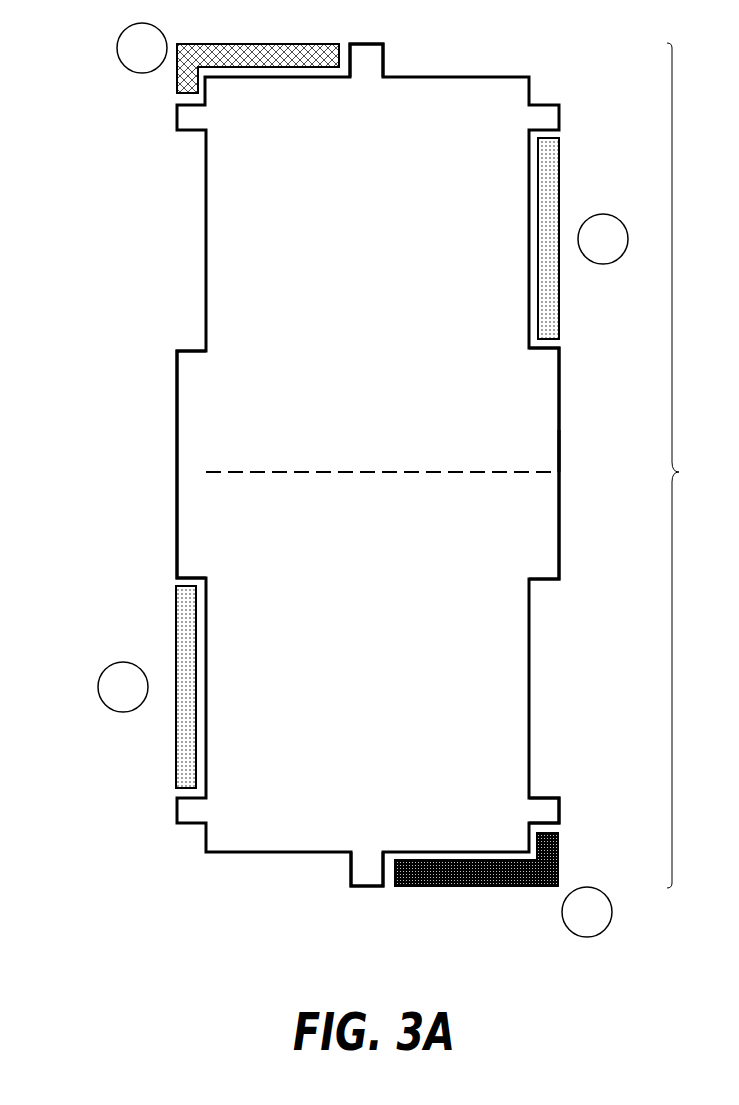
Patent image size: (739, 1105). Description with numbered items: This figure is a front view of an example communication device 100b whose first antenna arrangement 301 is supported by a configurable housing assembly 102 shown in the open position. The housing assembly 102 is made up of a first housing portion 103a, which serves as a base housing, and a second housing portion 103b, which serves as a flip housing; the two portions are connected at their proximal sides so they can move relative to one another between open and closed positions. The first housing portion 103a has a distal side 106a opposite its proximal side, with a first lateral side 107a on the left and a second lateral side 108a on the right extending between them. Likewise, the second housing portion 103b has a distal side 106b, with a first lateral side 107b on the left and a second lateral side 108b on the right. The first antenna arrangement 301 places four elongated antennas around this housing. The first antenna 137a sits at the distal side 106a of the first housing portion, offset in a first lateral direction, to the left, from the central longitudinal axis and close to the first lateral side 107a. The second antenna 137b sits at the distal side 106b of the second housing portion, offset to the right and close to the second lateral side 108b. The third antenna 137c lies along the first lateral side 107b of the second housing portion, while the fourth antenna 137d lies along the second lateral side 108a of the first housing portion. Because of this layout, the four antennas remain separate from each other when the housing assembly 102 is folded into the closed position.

The communication device 100b is at (99, 139).
The housing assembly 102 is at (515, 75).
The first housing portion 103a is at (560, 410).
The second housing portion 103b is at (560, 513).
The distal side 106a is at (390, 60).
The distal side 106b is at (373, 886).
The first lateral side 107a is at (177, 398).
The first lateral side 107b is at (177, 523).
The second lateral side 108a is at (562, 458).
The second lateral side 108b is at (559, 798).
The first antenna 137a is at (176, 90).
The second antenna 137b is at (562, 872).
The third antenna 137c is at (176, 622).
The fourth antenna 137d is at (562, 193).
The first antenna arrangement 301 is at (696, 465).